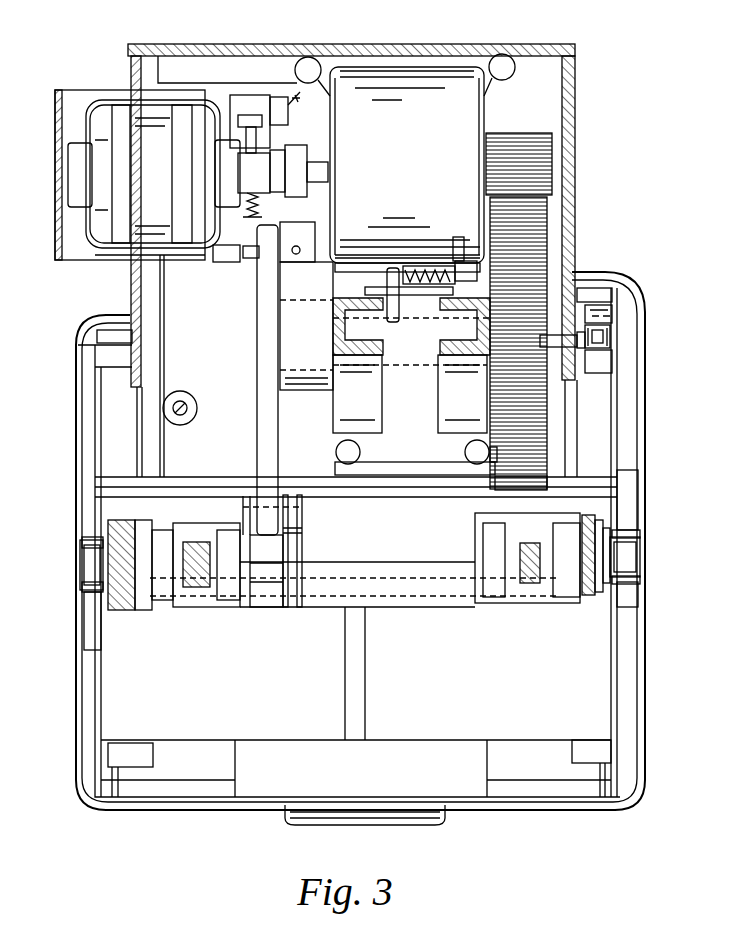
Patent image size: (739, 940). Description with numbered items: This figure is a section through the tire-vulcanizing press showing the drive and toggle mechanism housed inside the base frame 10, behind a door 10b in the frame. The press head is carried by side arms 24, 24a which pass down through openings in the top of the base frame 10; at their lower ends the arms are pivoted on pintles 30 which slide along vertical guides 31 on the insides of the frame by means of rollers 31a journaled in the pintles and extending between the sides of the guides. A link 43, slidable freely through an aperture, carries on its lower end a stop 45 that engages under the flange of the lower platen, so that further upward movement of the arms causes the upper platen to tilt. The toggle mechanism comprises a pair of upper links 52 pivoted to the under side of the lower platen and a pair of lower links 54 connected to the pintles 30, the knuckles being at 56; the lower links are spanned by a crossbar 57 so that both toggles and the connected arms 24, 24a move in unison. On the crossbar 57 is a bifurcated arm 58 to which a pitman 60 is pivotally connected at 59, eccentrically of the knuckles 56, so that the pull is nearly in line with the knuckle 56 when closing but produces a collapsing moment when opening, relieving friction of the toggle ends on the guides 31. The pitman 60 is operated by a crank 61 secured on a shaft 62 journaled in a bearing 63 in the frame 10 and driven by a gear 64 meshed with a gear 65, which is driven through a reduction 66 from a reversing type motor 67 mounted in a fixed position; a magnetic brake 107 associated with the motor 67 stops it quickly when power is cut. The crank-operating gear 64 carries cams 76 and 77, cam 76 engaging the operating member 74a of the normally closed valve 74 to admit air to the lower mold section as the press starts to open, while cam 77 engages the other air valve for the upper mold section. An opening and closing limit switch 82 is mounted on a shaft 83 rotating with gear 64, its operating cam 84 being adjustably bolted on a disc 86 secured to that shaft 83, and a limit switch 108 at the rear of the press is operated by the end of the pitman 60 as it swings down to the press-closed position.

The base frame 10 is at (76, 748).
The door 10b is at (293, 838).
The side arm 24 is at (592, 605).
The side arm 24a is at (120, 612).
The pintle 30 is at (645, 553).
The vertical guide 31 is at (648, 563).
The roller 31a is at (648, 560).
The link 43 is at (190, 405).
The stop 45 is at (194, 418).
The upper link 52 is at (530, 590).
The lower link 54 is at (470, 518).
The knuckle 56 is at (480, 545).
The crossbar 57 is at (450, 612).
The bifurcated arm 58 is at (302, 547).
The pivot 59 is at (302, 520).
The pitman 60 is at (257, 362).
The crank 61 is at (290, 308).
The shaft 62 is at (300, 392).
The bearing 63 is at (405, 390).
The gear 64 is at (542, 222).
The gear 65 is at (545, 176).
The reduction 66 is at (408, 80).
The reversing type motor 67 is at (105, 110).
The valve 74 is at (430, 285).
The operating member 74a is at (478, 282).
The cam 76 is at (480, 292).
The cam 77 is at (470, 440).
The limit switch 82 is at (610, 332).
The shaft 83 is at (565, 350).
The cam 84 is at (612, 364).
The disc 86 is at (612, 318).
The magnetic brake 107 is at (268, 130).
The limit switch 108 is at (222, 263).